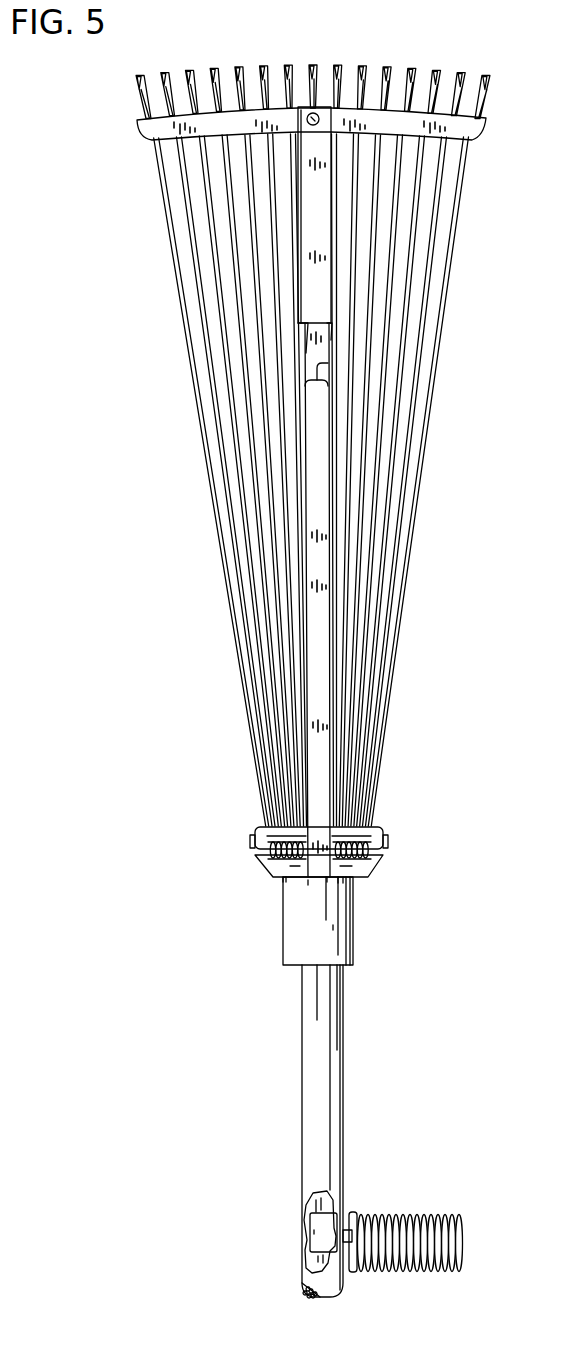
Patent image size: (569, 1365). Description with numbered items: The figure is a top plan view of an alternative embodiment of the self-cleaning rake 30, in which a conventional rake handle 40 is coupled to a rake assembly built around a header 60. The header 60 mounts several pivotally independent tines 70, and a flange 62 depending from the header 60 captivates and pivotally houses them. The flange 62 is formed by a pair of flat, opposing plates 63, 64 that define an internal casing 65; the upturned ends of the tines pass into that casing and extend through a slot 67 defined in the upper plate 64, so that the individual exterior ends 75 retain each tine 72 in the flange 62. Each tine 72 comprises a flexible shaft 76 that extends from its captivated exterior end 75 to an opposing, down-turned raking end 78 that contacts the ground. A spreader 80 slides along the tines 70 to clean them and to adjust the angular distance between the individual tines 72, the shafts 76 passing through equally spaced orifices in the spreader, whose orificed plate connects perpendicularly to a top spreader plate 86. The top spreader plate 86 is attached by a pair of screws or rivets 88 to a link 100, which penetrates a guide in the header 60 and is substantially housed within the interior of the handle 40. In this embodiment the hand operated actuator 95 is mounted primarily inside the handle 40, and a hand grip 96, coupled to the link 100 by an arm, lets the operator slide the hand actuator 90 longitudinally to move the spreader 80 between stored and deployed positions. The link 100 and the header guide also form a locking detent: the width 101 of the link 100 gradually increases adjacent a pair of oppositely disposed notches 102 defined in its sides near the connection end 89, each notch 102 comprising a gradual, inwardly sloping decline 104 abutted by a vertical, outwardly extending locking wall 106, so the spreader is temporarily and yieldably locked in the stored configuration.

The self-cleaning rake 30 is at (156, 825).
The rake handle 40 is at (346, 1052).
The header 60 is at (378, 922).
The flange 62 is at (403, 825).
The plate 63 is at (381, 822).
The upper plate 64 is at (385, 871).
The internal casing 65 is at (268, 841).
The slot 67 is at (388, 848).
The tines 70 is at (142, 160).
The individual tine 72 is at (168, 206).
The exterior end 75 is at (254, 853).
The flexible shaft 76 is at (186, 405).
The raking end 78 is at (362, 68).
The spreader 80 is at (494, 112).
The top spreader plate 86 is at (478, 118).
The screws or rivets 88 is at (311, 112).
The connection end 89 is at (330, 156).
The hand actuator 90 is at (378, 1147).
The hand operated actuator 95 is at (475, 1243).
The hand grip 96 is at (428, 1214).
The link 100 is at (356, 554).
The width 101 is at (332, 366).
The notches 102 is at (288, 332).
The inwardly sloping decline 104 is at (332, 347).
The locking wall 106 is at (332, 327).